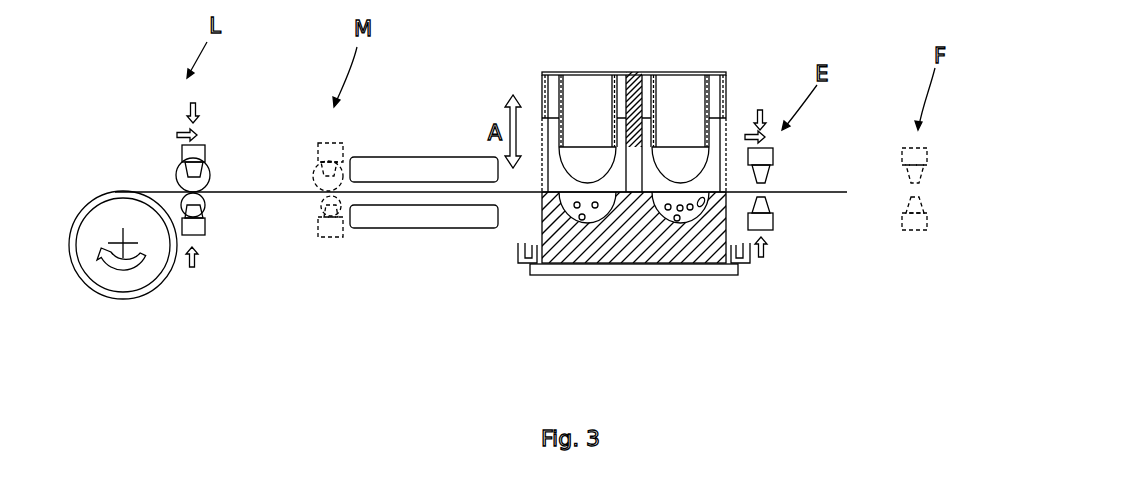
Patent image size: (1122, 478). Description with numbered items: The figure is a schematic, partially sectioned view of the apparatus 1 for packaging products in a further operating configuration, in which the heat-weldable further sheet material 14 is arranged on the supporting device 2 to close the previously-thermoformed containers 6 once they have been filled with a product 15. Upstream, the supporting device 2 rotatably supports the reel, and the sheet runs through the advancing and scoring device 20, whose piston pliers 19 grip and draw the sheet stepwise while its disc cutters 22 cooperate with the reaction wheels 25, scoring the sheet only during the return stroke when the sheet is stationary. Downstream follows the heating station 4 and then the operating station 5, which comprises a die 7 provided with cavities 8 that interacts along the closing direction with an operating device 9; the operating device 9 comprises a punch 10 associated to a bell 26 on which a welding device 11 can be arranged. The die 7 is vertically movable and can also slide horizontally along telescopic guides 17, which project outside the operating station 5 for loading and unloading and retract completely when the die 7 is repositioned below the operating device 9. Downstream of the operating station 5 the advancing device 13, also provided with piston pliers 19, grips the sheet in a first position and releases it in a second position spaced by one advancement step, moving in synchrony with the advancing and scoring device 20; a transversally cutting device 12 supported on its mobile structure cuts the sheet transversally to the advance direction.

The apparatus 1 is at (270, 388).
The supporting device 2 is at (106, 277).
The heating station 4 is at (397, 170).
The operating station 5 is at (748, 58).
The containers 6 is at (660, 212).
The die 7 is at (632, 250).
The cavities 8 is at (702, 207).
The operating device 9 is at (625, 52).
The punch 10 is at (682, 167).
The welding device 11 is at (552, 132).
The transversally cutting device 12 is at (768, 177).
The advancing device 13 is at (802, 133).
The further sheet material 14 is at (410, 192).
The product 15 is at (583, 209).
The telescopic guides 17 is at (520, 267).
The piston pliers 19 is at (203, 170).
The advancing and scoring device 20 is at (162, 150).
The disc cutters 22 is at (180, 171).
The reaction wheels 25 is at (205, 196).
The bell 26 is at (530, 182).